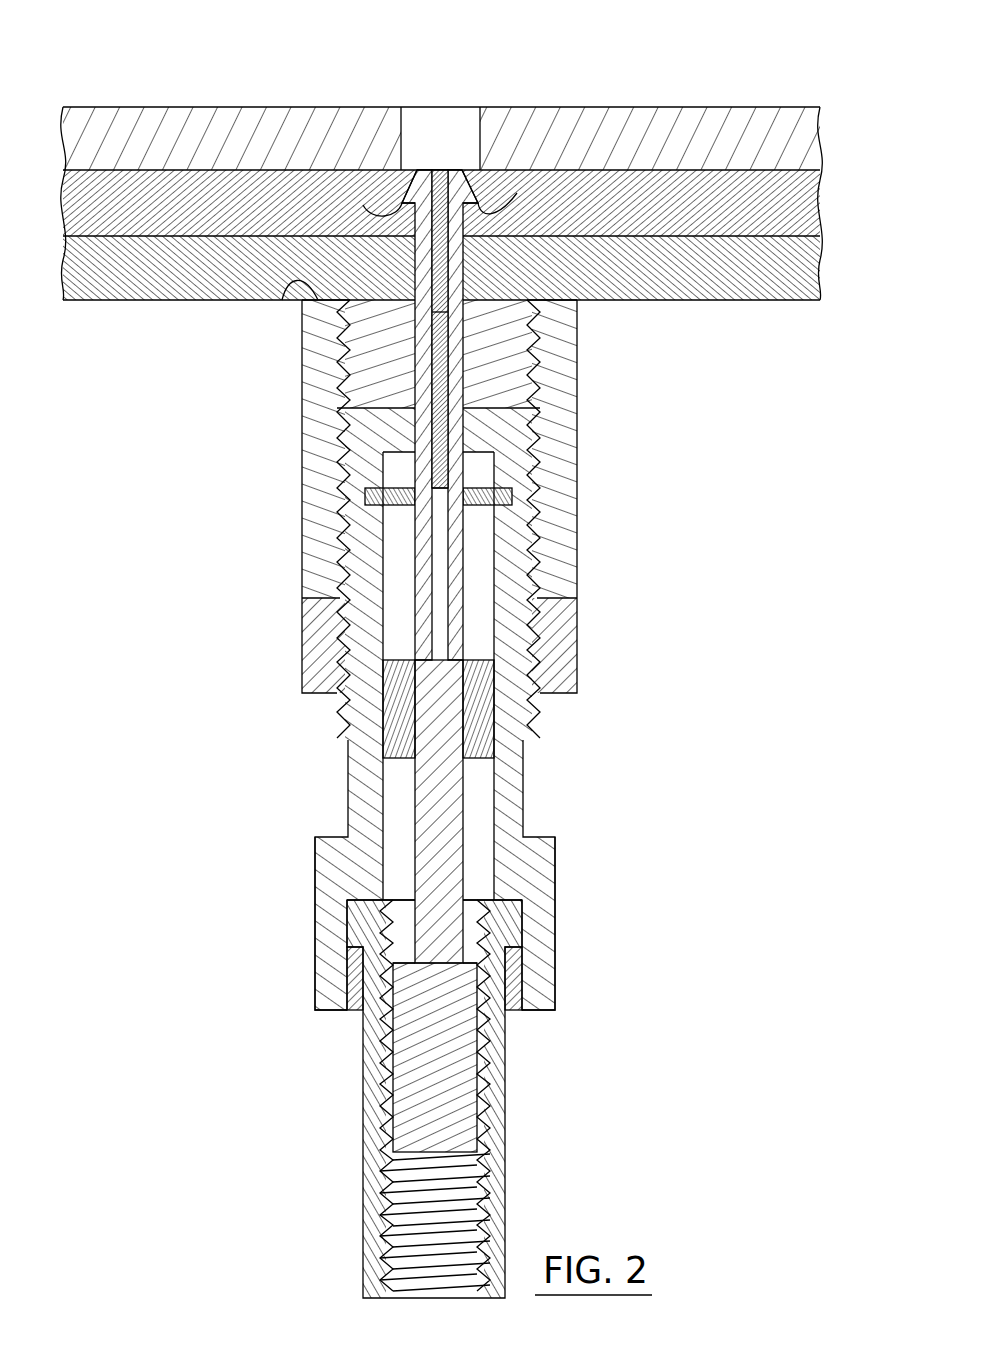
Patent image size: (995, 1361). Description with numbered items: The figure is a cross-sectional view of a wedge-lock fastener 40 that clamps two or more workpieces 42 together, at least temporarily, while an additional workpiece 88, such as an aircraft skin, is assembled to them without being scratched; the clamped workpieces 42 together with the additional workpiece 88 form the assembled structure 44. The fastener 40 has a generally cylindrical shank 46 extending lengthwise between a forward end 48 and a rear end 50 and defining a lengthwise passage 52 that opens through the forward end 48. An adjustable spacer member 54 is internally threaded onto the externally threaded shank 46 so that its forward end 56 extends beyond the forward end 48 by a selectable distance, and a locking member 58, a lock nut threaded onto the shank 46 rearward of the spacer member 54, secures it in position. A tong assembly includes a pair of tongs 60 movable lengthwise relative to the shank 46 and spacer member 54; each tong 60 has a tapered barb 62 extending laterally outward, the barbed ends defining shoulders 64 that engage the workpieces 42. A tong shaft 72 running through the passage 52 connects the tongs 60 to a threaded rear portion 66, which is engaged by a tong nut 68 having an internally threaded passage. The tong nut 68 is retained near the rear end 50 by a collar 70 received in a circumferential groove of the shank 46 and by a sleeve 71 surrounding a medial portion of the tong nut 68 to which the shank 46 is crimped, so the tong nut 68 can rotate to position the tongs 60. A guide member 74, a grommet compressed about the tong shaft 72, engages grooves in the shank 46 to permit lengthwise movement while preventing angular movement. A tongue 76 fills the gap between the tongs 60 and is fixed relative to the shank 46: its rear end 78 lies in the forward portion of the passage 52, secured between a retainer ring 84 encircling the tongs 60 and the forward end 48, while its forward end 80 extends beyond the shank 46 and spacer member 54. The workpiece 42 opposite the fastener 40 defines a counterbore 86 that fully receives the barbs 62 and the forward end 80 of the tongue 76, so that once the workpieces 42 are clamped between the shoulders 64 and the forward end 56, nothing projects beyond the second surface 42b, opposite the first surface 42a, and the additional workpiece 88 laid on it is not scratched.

The wedge-lock fastener 40 is at (504, 654).
The workpieces 42 is at (452, 215).
The lower layer of laminate 42a is at (135, 303).
The second surface 42b is at (137, 167).
The structure 44 is at (452, 203).
The shank 46 is at (460, 729).
The forward end of the shank 48 is at (510, 405).
The rear end of the shank 50 is at (333, 1012).
The passage 52 is at (473, 605).
The adjustable spacer member 54 is at (308, 443).
The forward end of the adjustable spacer member 56 is at (294, 277).
The locking member 58 is at (556, 642).
The tongs 60 is at (440, 341).
The barb 62 is at (423, 170).
The shoulders 64 is at (368, 200).
The threaded rear portion 66 is at (455, 1095).
The tong nut 68 is at (418, 1099).
The collar 70 is at (357, 927).
The sleeve 71 is at (518, 1013).
The tong shaft 72 is at (423, 808).
The guide member 74 is at (392, 727).
The tongue 76 is at (440, 312).
The rear end of the tongue 78 is at (440, 482).
The forward end of the tongue 80 is at (589, 249).
The retainer ring 84 is at (367, 492).
The counterbore 86 is at (474, 176).
The additional workpiece 88 is at (790, 135).